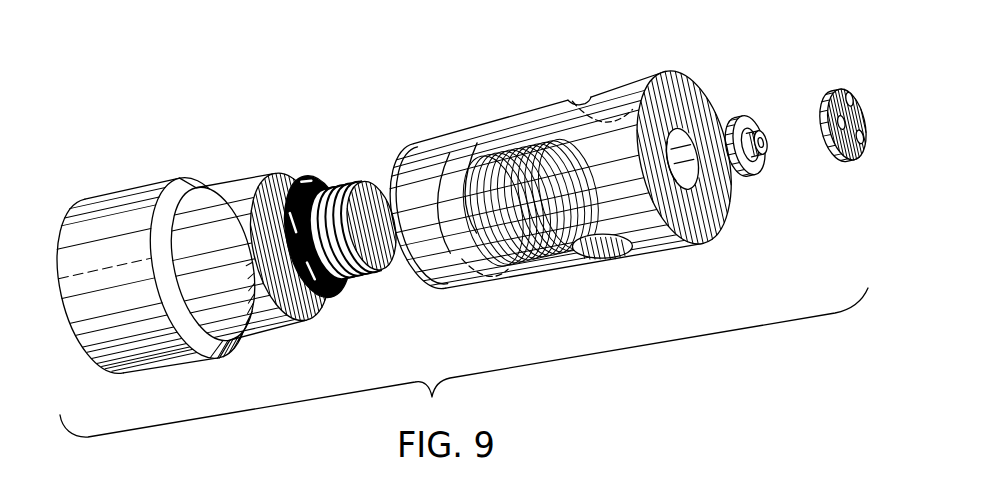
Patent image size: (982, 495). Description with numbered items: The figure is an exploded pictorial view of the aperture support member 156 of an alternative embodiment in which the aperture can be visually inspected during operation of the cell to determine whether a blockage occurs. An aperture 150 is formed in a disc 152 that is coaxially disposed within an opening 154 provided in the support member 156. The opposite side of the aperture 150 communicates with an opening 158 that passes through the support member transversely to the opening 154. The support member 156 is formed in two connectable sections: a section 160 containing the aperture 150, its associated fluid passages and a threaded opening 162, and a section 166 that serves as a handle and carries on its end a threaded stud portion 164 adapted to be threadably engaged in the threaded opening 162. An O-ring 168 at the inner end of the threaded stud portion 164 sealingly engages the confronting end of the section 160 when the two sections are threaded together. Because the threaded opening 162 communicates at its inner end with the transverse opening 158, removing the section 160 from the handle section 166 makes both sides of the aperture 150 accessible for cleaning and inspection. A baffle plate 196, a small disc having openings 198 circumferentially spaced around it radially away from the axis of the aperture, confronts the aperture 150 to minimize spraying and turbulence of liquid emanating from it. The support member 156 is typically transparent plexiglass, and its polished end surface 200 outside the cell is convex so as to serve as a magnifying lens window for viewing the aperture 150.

The aperture 150 is at (767, 130).
The disc 152 is at (740, 118).
The opening 154 is at (692, 133).
The support member 156 is at (528, 72).
The opening 158 is at (597, 100).
The section 160 is at (532, 270).
The threaded opening 162 is at (491, 160).
The threaded stud portion 164 is at (342, 192).
The section 166 is at (140, 210).
The O-ring 168 is at (308, 188).
The baffle plate 196 is at (862, 102).
The openings 198 is at (838, 87).
The end surface 200 is at (55, 247).